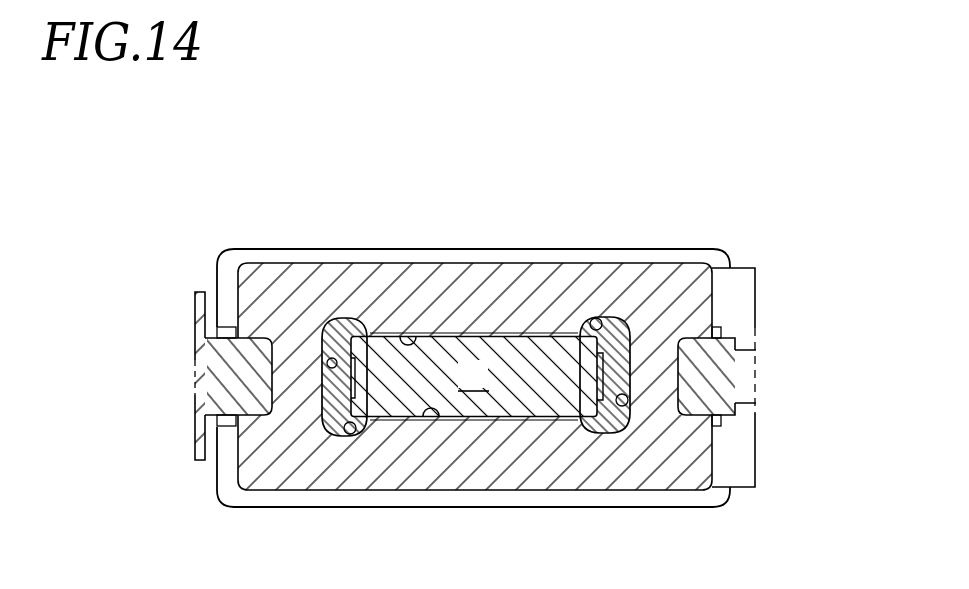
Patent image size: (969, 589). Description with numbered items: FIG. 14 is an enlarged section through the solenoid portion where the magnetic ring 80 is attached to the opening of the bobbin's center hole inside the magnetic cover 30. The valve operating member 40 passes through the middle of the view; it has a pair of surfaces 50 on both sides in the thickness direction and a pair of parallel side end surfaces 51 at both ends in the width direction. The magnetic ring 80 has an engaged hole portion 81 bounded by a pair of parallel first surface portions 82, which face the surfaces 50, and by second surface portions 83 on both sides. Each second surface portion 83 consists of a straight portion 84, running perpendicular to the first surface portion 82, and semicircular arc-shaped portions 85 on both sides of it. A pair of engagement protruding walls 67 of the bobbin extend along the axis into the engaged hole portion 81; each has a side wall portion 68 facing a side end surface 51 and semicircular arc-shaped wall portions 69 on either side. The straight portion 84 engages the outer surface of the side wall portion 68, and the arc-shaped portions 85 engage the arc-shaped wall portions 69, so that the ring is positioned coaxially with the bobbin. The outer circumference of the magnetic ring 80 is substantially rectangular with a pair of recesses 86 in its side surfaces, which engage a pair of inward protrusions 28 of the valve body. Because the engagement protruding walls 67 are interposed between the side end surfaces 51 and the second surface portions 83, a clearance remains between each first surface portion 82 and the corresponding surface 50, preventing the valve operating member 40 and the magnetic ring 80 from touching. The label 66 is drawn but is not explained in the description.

The inward protrusion 28 is at (228, 398).
The magnetic cover 30 is at (697, 262).
The valve operating member 40 is at (474, 377).
The surface 50 is at (433, 336).
The side end surface 51 is at (243, 492).
The slot portion 66 is at (374, 319).
The engagement protruding wall 67 is at (318, 341).
The side wall portion 68 is at (324, 428).
The semicircular arc-shaped wall portion 69 is at (345, 319).
The magnetic ring 80 is at (527, 242).
The engaged hole portion 81 is at (478, 324).
The first surface portion 82 is at (399, 334).
The second surface portion 83 is at (634, 328).
The straight portion 84 is at (321, 378).
The semicircular arc-shaped portion 85 is at (587, 318).
The recess 86 is at (255, 350).